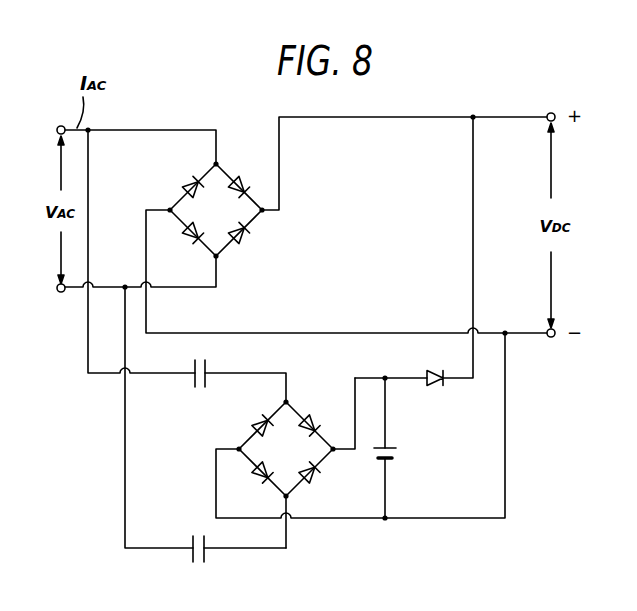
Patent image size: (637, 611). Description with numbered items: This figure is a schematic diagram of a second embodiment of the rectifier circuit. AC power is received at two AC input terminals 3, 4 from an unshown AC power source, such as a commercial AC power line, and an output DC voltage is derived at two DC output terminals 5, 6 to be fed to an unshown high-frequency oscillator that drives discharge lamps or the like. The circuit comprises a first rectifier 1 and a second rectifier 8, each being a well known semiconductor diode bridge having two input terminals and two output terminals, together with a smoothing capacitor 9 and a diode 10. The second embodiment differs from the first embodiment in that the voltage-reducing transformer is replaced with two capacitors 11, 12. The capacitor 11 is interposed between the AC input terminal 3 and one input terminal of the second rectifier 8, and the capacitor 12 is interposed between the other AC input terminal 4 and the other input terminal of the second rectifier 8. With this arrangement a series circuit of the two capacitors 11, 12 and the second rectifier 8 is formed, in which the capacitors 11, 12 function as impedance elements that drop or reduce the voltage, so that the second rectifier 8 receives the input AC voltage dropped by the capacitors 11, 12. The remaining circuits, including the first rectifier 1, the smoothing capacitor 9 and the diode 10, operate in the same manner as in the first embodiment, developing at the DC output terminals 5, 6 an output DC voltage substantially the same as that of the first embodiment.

The first rectifier 1 is at (220, 211).
The AC input terminal 3 is at (57, 127).
The AC input terminal 4 is at (59, 295).
The DC output terminal 5 is at (549, 112).
The DC output terminal 6 is at (551, 339).
The second rectifier 8 is at (292, 456).
The smoothing capacitor 9 is at (397, 457).
The diode 10 is at (433, 387).
The capacitor 11 is at (208, 367).
The capacitor 12 is at (199, 536).